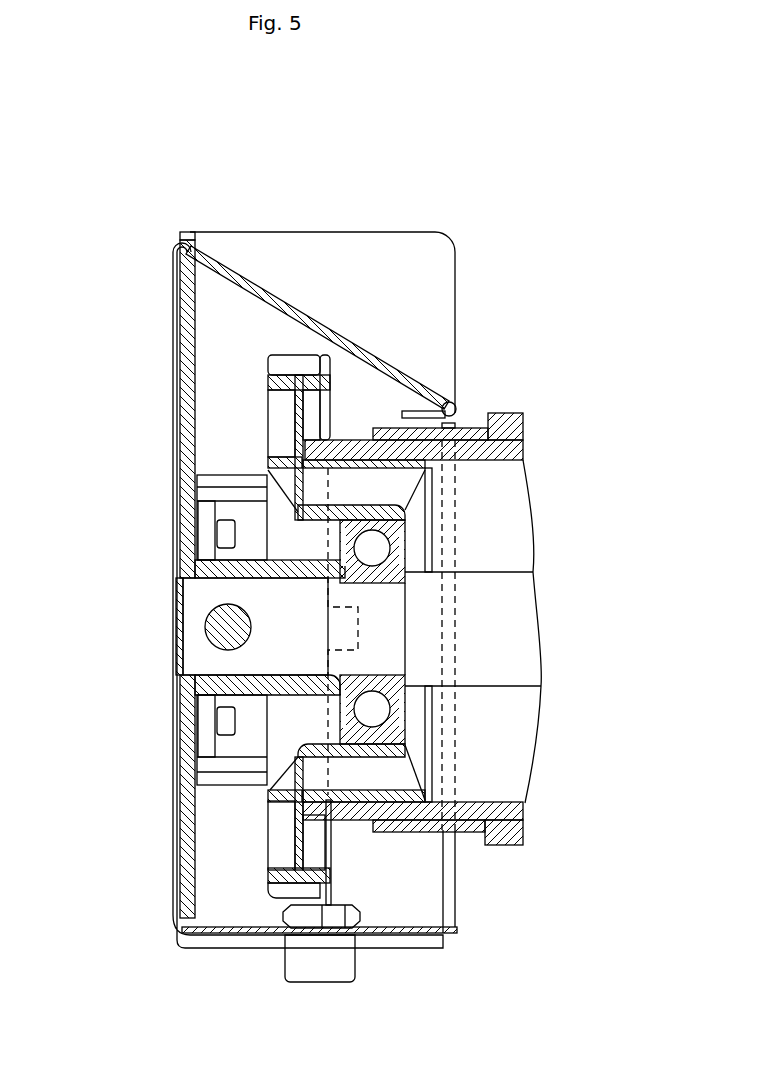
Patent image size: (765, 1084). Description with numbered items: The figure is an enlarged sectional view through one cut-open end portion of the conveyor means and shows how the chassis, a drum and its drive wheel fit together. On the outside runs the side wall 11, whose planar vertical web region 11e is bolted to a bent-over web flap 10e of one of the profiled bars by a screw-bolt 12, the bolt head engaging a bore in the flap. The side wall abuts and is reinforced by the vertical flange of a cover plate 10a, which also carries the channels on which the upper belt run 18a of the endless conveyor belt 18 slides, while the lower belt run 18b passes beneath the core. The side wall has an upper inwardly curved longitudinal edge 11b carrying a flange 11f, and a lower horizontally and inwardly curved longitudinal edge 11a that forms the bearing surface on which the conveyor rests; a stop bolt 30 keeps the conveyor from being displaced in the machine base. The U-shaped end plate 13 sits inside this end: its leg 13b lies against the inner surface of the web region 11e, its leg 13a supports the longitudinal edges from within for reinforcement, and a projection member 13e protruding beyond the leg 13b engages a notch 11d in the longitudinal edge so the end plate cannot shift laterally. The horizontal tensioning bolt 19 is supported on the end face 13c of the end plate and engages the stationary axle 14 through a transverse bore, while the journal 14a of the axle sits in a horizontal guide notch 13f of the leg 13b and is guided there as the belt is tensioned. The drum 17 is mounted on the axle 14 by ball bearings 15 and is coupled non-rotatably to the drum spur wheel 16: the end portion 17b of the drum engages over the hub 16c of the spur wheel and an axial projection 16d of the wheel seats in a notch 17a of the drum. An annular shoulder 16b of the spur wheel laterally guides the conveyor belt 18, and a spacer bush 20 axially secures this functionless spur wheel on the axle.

The cover plate 10a is at (173, 627).
The web flap 10e is at (205, 522).
The side wall 11 is at (301, 614).
The lower longitudinal edge 11a is at (232, 937).
The upper longitudinal edge 11b is at (310, 310).
The notch 11d is at (185, 248).
The web region 11e is at (175, 406).
The flange 11f is at (418, 412).
The screw-bolt 12 is at (224, 530).
The end plate 13 is at (320, 556).
The U-shaped leg 13a is at (448, 888).
The U-shaped leg 13b is at (185, 322).
The end face 13c is at (428, 330).
The projection member 13e is at (190, 230).
The guide notch 13f is at (178, 580).
The axle 14 is at (525, 653).
The journal 14a is at (190, 660).
The ball bearing 15 is at (405, 730).
The drum spur wheel 16 is at (342, 676).
The annular shoulder 16b is at (350, 920).
The hub 16c is at (425, 466).
The axial projection 16d is at (347, 630).
The drum 17 is at (419, 626).
The notch 17a is at (398, 617).
The end portion 17b is at (405, 802).
The conveyor belt 18 is at (485, 633).
The upper belt run 18a is at (503, 430).
The lower belt run 18b is at (508, 838).
The tensioning bolt 19 is at (210, 627).
The spacer bush 20 is at (222, 568).
The stop bolt 30 is at (315, 962).